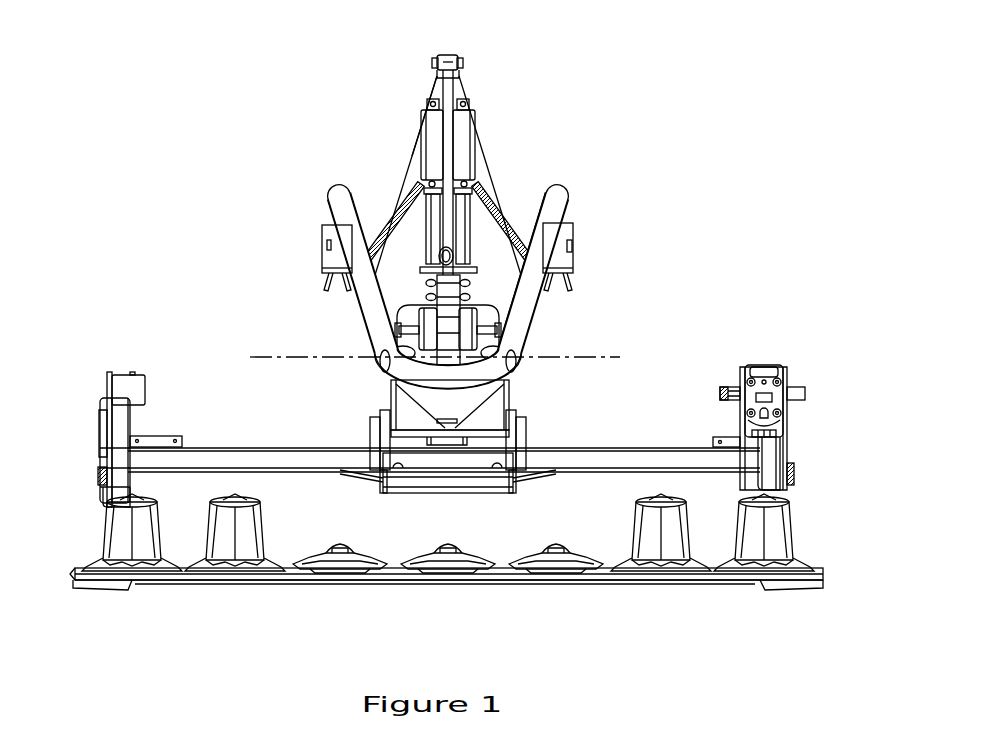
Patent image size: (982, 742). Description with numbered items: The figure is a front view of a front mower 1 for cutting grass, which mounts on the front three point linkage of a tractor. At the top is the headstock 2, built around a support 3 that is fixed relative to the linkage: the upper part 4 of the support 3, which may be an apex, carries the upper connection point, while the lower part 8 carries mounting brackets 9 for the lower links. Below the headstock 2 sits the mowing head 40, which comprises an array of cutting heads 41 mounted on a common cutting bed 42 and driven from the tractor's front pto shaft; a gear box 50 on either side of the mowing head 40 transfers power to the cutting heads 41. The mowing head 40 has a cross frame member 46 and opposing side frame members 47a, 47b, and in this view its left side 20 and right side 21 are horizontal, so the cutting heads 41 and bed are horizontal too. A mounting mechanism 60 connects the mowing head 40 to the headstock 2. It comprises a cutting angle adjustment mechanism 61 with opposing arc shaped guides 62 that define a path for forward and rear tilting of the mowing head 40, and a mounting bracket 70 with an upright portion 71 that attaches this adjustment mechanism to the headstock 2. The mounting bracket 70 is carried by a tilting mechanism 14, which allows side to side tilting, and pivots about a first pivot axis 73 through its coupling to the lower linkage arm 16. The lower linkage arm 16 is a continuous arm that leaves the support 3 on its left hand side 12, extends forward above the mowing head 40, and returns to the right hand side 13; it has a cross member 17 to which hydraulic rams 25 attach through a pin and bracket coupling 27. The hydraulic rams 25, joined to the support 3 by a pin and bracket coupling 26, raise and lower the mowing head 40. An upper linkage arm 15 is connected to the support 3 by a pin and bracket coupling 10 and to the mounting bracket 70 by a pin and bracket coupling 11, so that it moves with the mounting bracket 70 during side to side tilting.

The front mower 1 is at (208, 222).
The headstock 2 is at (528, 172).
The support 3 is at (412, 142).
The upper part 4 is at (467, 74).
The lower part 8 is at (322, 258).
The mounting brackets 9 is at (325, 291).
The pin and bracket coupling 10 is at (460, 52).
The pin and bracket coupling 11 is at (432, 252).
The left hand side 12 is at (616, 196).
The right hand side 13 is at (304, 192).
The tilting mechanism 14 is at (482, 213).
The upper linkage arm 15 is at (452, 132).
The lower linkage arm 16 is at (545, 234).
The cross member 17 is at (405, 297).
The left side 20 is at (772, 346).
The right side 21 is at (127, 355).
The hydraulic rams 25 is at (423, 128).
The pin and bracket coupling 26 is at (428, 98).
The pin and bracket coupling 27 is at (482, 272).
The mowing head 40 is at (88, 460).
The cutting heads 41 is at (142, 555).
The cutting bed 42 is at (180, 585).
The cross frame member 46 is at (232, 446).
The side frame member 47a is at (102, 431).
The side frame member 47b is at (790, 446).
The gear box 50 is at (108, 386).
The mounting mechanism 60 is at (540, 408).
The cutting angle adjustment mechanism 61 is at (376, 418).
The arc shaped guides 62 is at (382, 446).
The mounting bracket 70 is at (500, 384).
The upright portion 71 is at (476, 300).
The first pivot axis 73 is at (258, 352).